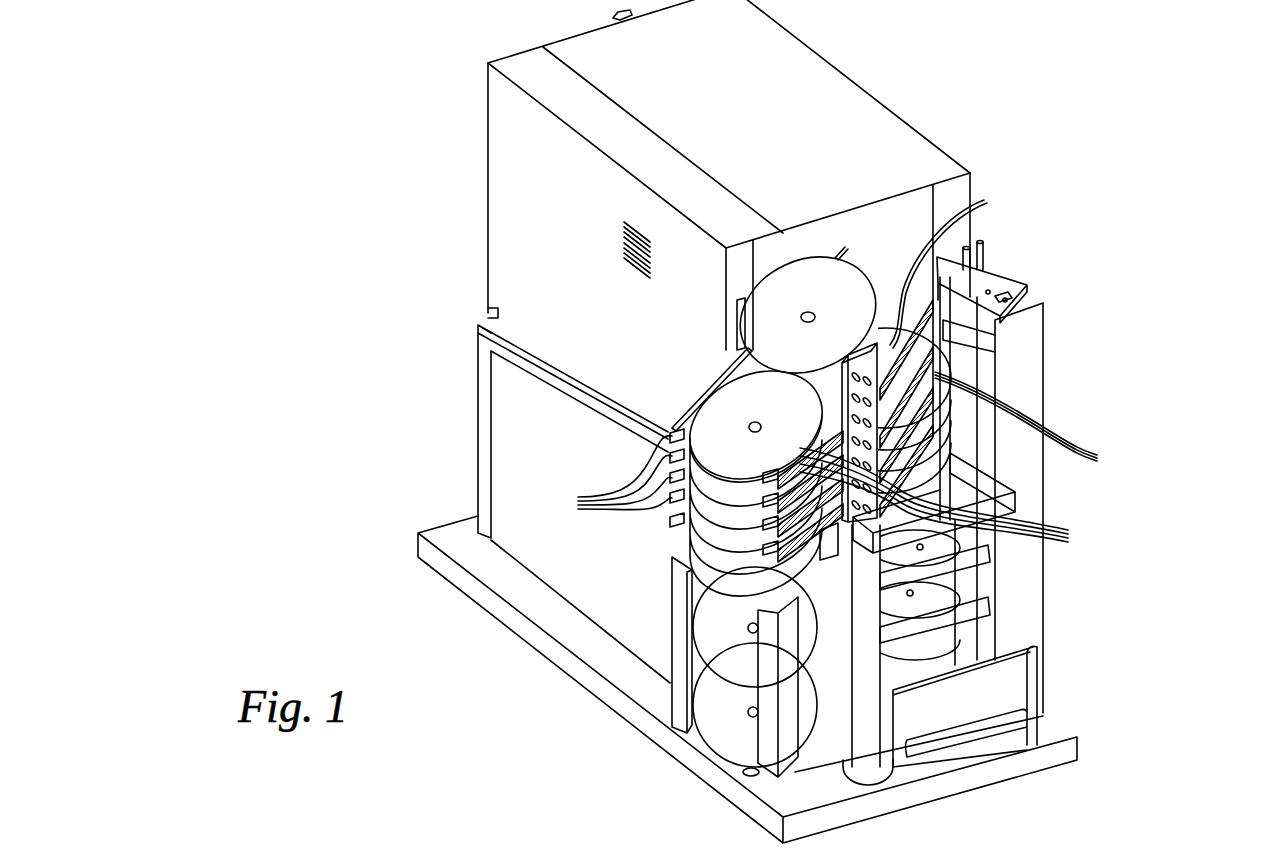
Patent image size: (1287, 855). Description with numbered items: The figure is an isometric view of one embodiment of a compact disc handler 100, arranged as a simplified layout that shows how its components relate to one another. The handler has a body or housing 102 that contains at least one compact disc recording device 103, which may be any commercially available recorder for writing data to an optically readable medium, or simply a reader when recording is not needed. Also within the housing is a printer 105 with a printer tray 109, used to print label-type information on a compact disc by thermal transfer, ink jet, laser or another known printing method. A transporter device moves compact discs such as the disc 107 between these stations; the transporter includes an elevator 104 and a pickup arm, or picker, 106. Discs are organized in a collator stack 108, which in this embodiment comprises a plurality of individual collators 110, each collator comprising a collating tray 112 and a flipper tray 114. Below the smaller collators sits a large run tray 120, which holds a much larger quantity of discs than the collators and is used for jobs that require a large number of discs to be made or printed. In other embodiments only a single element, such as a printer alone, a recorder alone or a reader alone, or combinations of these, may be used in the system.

The compact disc handler 100 is at (1165, 172).
The housing 102 is at (938, 138).
The compact disc recording device 103 is at (993, 605).
The elevator 104 is at (1045, 396).
The printer 105 is at (877, 97).
The pickup arm 106 is at (970, 352).
The disc 107 is at (858, 268).
The collator stack 108 is at (652, 390).
The printer tray 109 is at (1017, 500).
The collator 110 is at (613, 478).
The collating tray 112 is at (933, 501).
The flipper tray 114 is at (1014, 326).
The large run tray 120 is at (670, 663).